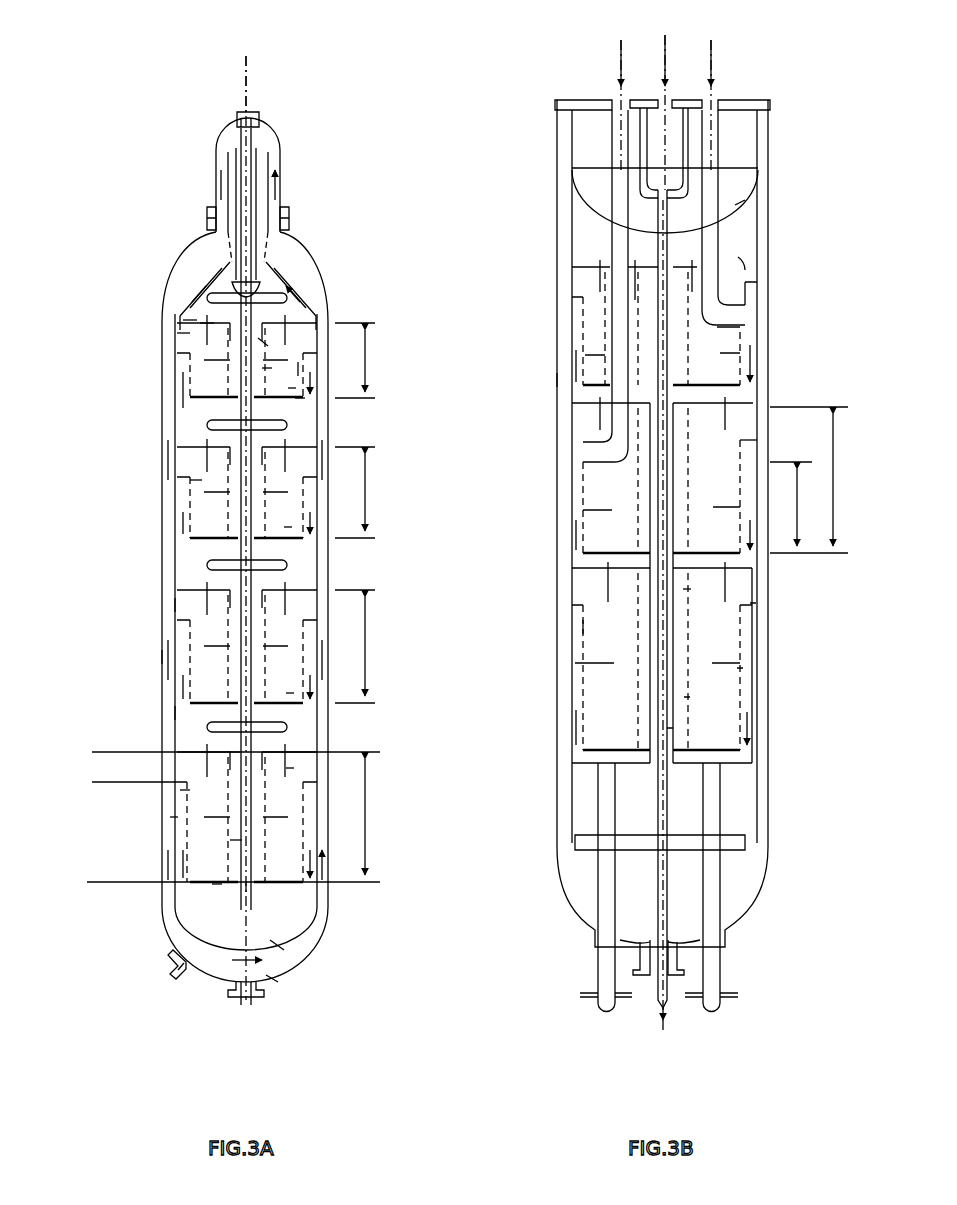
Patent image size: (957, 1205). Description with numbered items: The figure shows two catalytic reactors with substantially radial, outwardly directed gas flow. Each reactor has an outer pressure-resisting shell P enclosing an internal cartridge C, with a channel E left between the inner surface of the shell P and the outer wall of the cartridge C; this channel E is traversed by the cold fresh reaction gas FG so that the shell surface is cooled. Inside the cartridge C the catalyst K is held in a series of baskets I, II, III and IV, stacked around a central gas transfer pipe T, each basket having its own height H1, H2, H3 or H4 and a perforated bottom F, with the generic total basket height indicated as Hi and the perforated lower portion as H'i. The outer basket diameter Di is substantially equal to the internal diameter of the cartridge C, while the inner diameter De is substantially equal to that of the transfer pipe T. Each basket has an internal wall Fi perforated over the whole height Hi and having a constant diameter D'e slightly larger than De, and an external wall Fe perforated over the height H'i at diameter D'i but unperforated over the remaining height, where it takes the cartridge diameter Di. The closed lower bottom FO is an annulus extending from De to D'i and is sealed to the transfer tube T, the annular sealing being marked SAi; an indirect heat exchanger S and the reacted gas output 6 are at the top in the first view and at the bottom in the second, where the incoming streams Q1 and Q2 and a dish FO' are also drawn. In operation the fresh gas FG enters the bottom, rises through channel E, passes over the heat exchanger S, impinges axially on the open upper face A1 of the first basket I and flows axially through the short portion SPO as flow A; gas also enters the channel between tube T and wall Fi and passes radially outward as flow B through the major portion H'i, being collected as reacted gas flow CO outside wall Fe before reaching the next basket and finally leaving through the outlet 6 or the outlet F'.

In FIG. 3A, the reacted gas output 6 is at (245, 72).
In FIG. 3B, the reacted gas output 6 is at (657, 1026).
In FIG. 3A, the indirect heat exchanger S is at (250, 193).
In FIG. 3A, the axial gas flow A is at (207, 318).
In FIG. 3B, the axial gas flow A is at (743, 257).
In FIG. 3A, the open upper face of first catalyst basket A1 is at (190, 317).
In FIG. 3A, the axially traversed portion of basket SPO is at (190, 333).
In FIG. 3A, the reacted gas flow CO is at (187, 400).
In FIG. 3A, the catalyst K is at (200, 480).
In FIG. 3A, the channel between shell and cartridge E is at (177, 605).
In FIG. 3B, the channel between shell and cartridge E is at (567, 380).
In FIG. 3A, the outer pressure-resisting shell P is at (165, 657).
In FIG. 3A, the internal cartridge C is at (177, 713).
In FIG. 3A, the central gas transfer pipe T is at (233, 758).
In FIG. 3A, the diameter of perforated external wall portion D'i is at (136, 800).
In FIG. 3A, the outer basket diameter Di is at (172, 817).
In FIG. 3B, the outer basket diameter Di is at (753, 603).
In FIG. 3A, the inner basket diameter De is at (237, 840).
In FIG. 3B, the inner basket diameter De is at (687, 697).
In FIG. 3A, the diameter of internal wall Fi D'e is at (147, 917).
In FIG. 3A, the fresh reaction gas FG is at (180, 967).
In FIG. 3B, the fresh reaction gas FG is at (662, 100).
In FIG. 3A, the perforated bottom F is at (299, 1013).
In FIG. 3A, the secondary outlet F' is at (312, 958).
In FIG. 3A, the annular sealing SAi is at (278, 945).
In FIG. 3A, the internal wall Fi is at (263, 342).
In FIG. 3B, the internal wall Fi is at (687, 589).
In FIG. 3A, the radial outward gas flow B is at (267, 368).
In FIG. 3A, the height of first basket H1 is at (355, 360).
In FIG. 3A, the external wall Fe is at (303, 369).
In FIG. 3B, the external wall Fe is at (583, 627).
In FIG. 3A, the first catalyst basket I is at (292, 388).
In FIG. 3A, the lower closed bottom FO is at (356, 413).
In FIG. 3A, the height of second basket H2 is at (355, 492).
In FIG. 3A, the second catalyst basket II is at (288, 527).
In FIG. 3A, the height of third basket H3 is at (355, 646).
In FIG. 3A, the third catalyst basket III is at (290, 693).
In FIG. 3A, the fourth catalyst basket IV is at (290, 768).
In FIG. 3A, the height of fourth basket H4 is at (233, 817).
In FIG. 3B, the second feed stream Q2 is at (605, 236).
In FIG. 3B, the first feed stream Q1 is at (722, 168).
In FIG. 3B, the oxygen distribution dish FO' is at (789, 193).
In FIG. 3B, the total basket height Hi is at (809, 480).
In FIG. 3B, the perforated height of external wall H'i is at (791, 504).